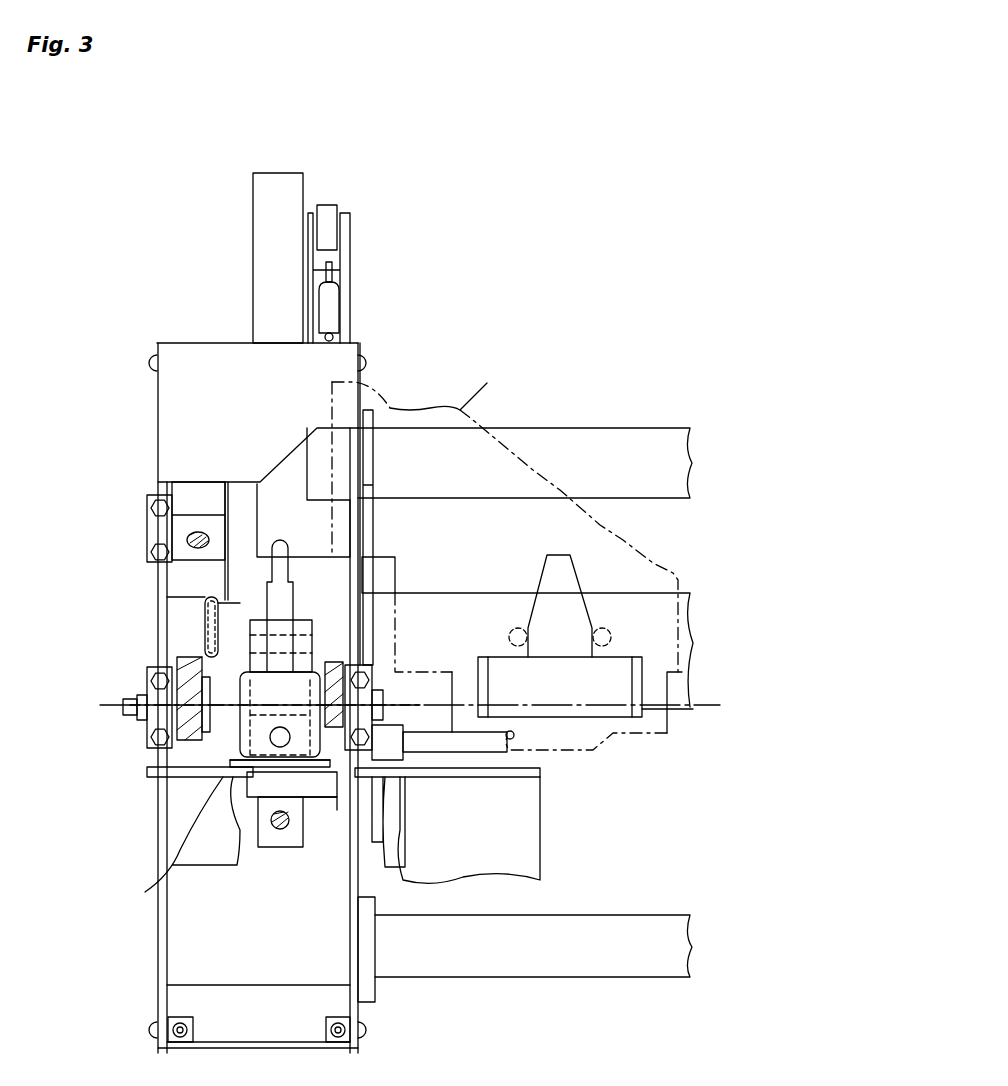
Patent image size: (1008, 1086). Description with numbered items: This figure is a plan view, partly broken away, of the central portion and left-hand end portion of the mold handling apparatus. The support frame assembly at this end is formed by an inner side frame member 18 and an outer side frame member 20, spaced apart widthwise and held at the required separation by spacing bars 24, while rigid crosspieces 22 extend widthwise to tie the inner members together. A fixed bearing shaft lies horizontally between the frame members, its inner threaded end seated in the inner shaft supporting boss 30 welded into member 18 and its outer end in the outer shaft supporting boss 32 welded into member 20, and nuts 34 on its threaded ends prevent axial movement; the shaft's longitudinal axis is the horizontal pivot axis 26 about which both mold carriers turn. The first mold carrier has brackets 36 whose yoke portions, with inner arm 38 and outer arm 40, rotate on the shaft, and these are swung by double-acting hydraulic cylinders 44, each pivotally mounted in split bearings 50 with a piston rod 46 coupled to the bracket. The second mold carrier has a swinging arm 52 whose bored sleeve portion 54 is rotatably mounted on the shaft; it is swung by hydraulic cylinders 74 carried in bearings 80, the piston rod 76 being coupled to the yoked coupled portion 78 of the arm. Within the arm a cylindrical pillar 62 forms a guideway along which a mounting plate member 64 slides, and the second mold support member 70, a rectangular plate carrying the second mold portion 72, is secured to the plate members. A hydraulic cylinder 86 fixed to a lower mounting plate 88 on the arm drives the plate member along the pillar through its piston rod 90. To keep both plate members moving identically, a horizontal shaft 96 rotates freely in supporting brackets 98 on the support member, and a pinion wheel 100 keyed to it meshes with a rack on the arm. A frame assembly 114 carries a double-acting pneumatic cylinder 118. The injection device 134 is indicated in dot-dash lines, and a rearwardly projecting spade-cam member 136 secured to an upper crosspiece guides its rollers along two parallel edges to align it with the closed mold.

The inner side frame member 18 is at (355, 910).
The outer side frame member 20 is at (162, 927).
The crosspieces 22 is at (648, 479).
The spacing bars 24 is at (258, 1016).
The pivot axis 26 is at (700, 707).
The inner shaft supporting boss 30 is at (362, 690).
The outer shaft supporting boss 32 is at (147, 731).
The nuts 34 is at (147, 690).
The brackets 36 is at (187, 613).
The inner arm 38 is at (337, 655).
The outer arm 40 is at (180, 660).
The double-acting hydraulic cylinders 44 is at (192, 495).
The piston rod 46 is at (188, 539).
The split bearings 50 is at (170, 527).
The swinging arms 52 is at (247, 743).
The bored sleeve portion 54 is at (234, 713).
The cylindrical pillar 62 is at (283, 727).
The mounting plate member 64 is at (315, 785).
The second mold support member 70 is at (160, 778).
The second mold portion 72 is at (180, 836).
The double-acting hydraulic cylinders 74 is at (290, 236).
The piston rod 76 is at (253, 563).
The yoked coupled portion 78 is at (300, 625).
The bearings 80 is at (280, 540).
The double-acting hydraulic cylinders 86 is at (295, 848).
The lower mounting plate 88 is at (305, 800).
The piston rods 90 is at (275, 835).
The horizontal shaft 96 is at (507, 745).
The supporting brackets 98 is at (397, 743).
The pinion wheel 100 is at (347, 795).
The frame assembly 114 is at (347, 322).
The double-acting pneumatic cylinder 118 is at (333, 297).
The injection device 134 is at (487, 383).
The spade-cam member 136 is at (553, 566).